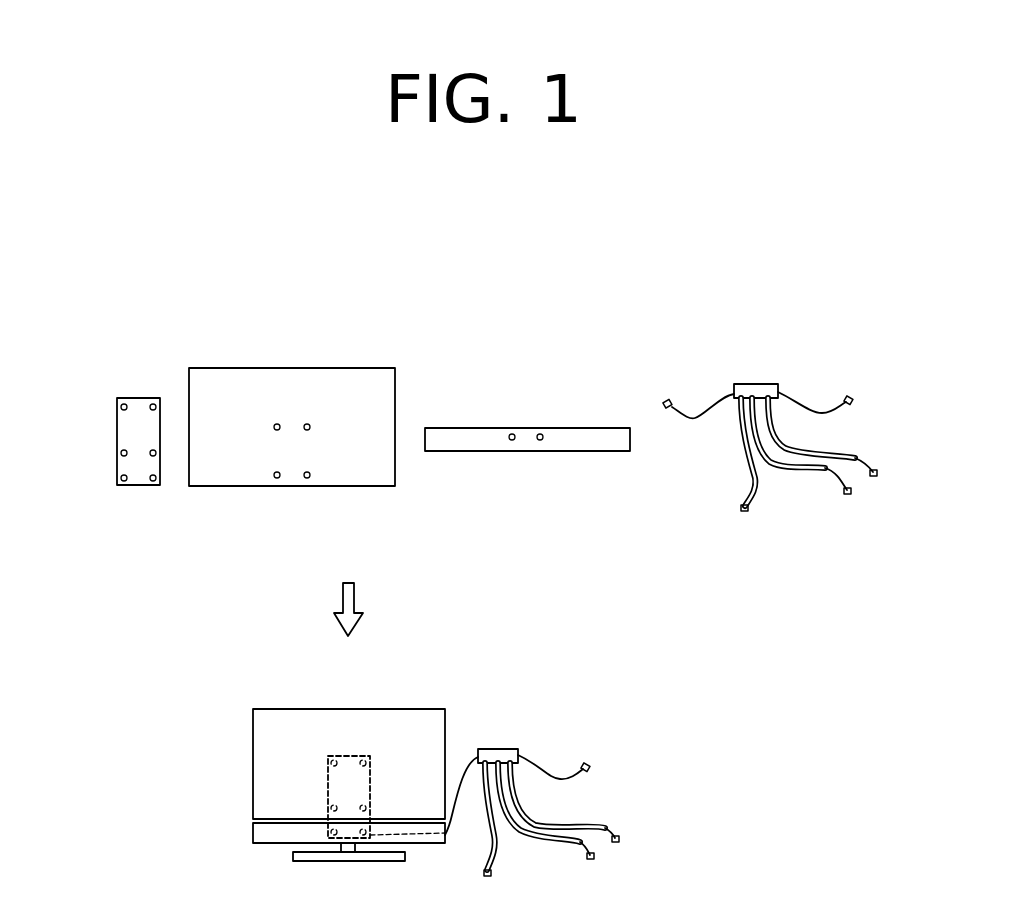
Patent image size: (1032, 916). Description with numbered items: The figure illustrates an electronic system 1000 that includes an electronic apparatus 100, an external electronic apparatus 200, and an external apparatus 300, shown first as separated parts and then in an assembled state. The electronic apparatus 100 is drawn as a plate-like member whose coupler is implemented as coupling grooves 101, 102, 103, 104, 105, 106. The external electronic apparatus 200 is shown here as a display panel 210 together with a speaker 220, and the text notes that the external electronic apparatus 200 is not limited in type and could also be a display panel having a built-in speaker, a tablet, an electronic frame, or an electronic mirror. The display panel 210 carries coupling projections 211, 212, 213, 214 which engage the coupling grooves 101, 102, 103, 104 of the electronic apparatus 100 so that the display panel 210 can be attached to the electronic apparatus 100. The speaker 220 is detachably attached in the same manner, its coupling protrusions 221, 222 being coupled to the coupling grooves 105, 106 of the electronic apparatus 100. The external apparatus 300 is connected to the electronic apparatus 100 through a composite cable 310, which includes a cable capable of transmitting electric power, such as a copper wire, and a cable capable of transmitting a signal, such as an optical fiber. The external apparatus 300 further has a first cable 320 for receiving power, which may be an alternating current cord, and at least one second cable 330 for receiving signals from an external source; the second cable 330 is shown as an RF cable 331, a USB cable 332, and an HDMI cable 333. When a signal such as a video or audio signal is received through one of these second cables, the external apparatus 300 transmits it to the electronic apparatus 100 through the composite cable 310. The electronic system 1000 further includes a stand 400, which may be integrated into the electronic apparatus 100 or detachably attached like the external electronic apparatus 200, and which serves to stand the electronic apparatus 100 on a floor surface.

The electronic system 1000 is at (474, 213).
The electronic apparatus 100 is at (118, 465).
The coupling groove 101 is at (124, 399).
The coupling groove 102 is at (153, 399).
The coupling groove 103 is at (123, 452).
The coupling groove 104 is at (150, 452).
The coupling groove 105 is at (122, 487).
The coupling groove 106 is at (155, 487).
The external electronic apparatus 200 is at (608, 296).
The display panel 210 is at (379, 367).
The coupling projection 211 is at (277, 420).
The coupling projection 212 is at (307, 420).
The coupling projection 213 is at (275, 482).
The coupling projection 214 is at (310, 482).
The speaker 220 is at (448, 427).
The coupling protrusion 221 is at (510, 445).
The coupling protrusion 222 is at (542, 445).
The external apparatus 300 is at (763, 383).
The composite cable 310 is at (700, 413).
The first cable 320 is at (815, 407).
The second cable 330 is at (893, 552).
The RF cable 331 is at (752, 494).
The USB cable 332 is at (820, 480).
The HDMI cable 333 is at (862, 475).
The stand 400 is at (315, 863).